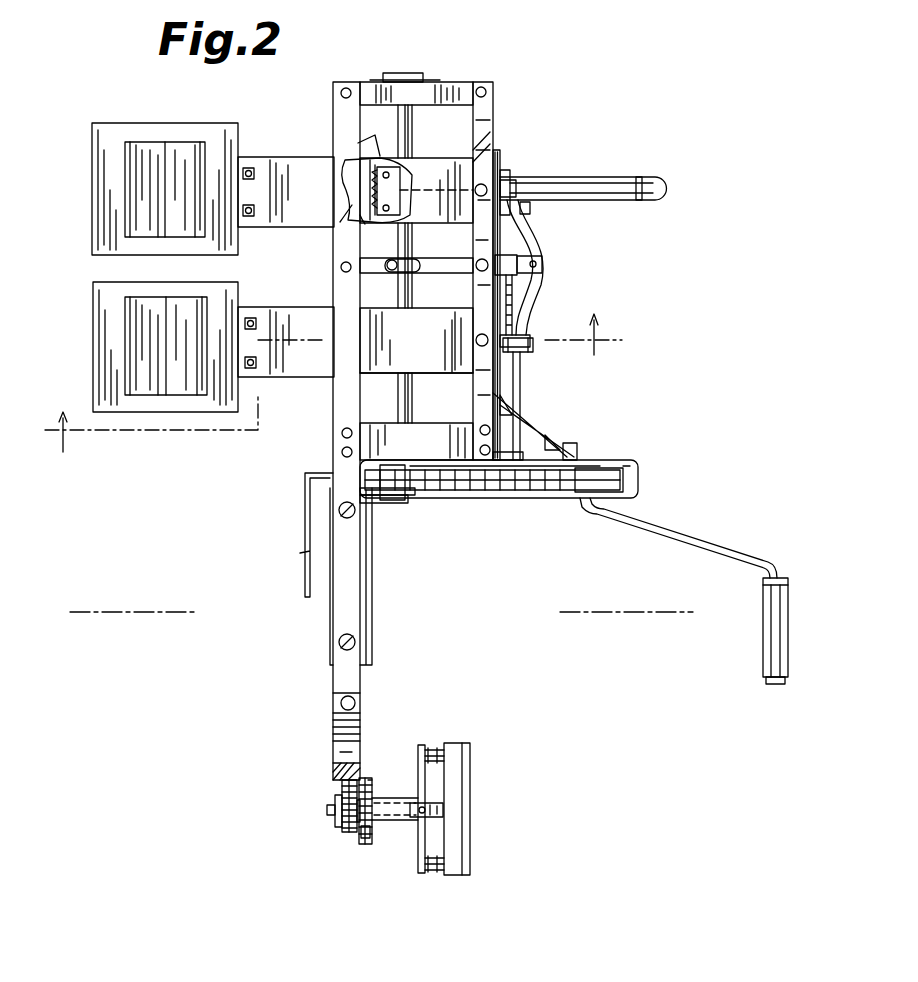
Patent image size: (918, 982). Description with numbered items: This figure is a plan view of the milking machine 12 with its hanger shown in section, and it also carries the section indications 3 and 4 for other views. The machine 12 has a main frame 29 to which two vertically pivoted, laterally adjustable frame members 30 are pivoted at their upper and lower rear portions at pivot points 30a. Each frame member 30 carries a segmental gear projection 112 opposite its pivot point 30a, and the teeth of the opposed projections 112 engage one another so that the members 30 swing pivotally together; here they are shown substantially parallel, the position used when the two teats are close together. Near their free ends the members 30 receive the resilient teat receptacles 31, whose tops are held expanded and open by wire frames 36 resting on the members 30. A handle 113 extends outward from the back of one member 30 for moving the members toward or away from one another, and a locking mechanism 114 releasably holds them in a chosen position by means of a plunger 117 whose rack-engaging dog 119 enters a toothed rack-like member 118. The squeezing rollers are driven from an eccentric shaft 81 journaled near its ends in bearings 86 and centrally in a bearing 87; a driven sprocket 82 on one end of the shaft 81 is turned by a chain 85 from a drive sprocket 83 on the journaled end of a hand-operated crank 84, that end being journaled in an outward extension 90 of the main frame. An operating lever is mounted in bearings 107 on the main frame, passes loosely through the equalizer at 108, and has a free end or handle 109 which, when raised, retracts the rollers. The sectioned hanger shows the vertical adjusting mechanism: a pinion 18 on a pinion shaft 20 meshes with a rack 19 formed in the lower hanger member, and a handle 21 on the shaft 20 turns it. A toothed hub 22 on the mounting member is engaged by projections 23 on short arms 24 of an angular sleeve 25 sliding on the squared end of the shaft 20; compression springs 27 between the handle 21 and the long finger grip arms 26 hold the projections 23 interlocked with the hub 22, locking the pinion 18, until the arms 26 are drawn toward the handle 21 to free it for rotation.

The milking machine 12 is at (525, 400).
The pinion 18 is at (346, 834).
The rack 19 is at (366, 778).
The pinion shaft 20 is at (330, 812).
The handle 21 is at (460, 781).
The toothed hub 22 is at (366, 842).
The projections 23 is at (372, 780).
The short outwardly projecting arms 24 is at (360, 820).
The angular sleeve 25 is at (425, 802).
The finger grip arms 26 is at (428, 846).
The compression springs 27 is at (434, 872).
The main frame 29 is at (333, 398).
The frame members 30 is at (493, 104).
The pivot points 30a is at (496, 186).
The teat receptacles 31 is at (170, 160).
The wire frames 36 is at (165, 140).
The eccentric shaft 81 is at (400, 398).
The driven sprocket 82 is at (407, 500).
The drive sprocket 83 is at (575, 495).
The hand-operated crank 84 is at (660, 527).
The chain 85 is at (497, 495).
The bearings 86 is at (418, 73).
The bearing 87 is at (402, 273).
The outward extension 90 is at (630, 462).
The bearings 107 is at (515, 318).
The hole in the equalizer 108 is at (545, 268).
The handle of the lever 109 is at (305, 548).
The segmental gear projections 112 is at (505, 248).
The handle 113 is at (652, 178).
The locking mechanism 114 is at (398, 182).
The plunger 117 is at (478, 150).
The toothed rack-like member 118 is at (356, 206).
The rack-engaging dog 119 is at (362, 218).
The section line 3 is at (327, 382).
The section line 4 is at (383, 599).